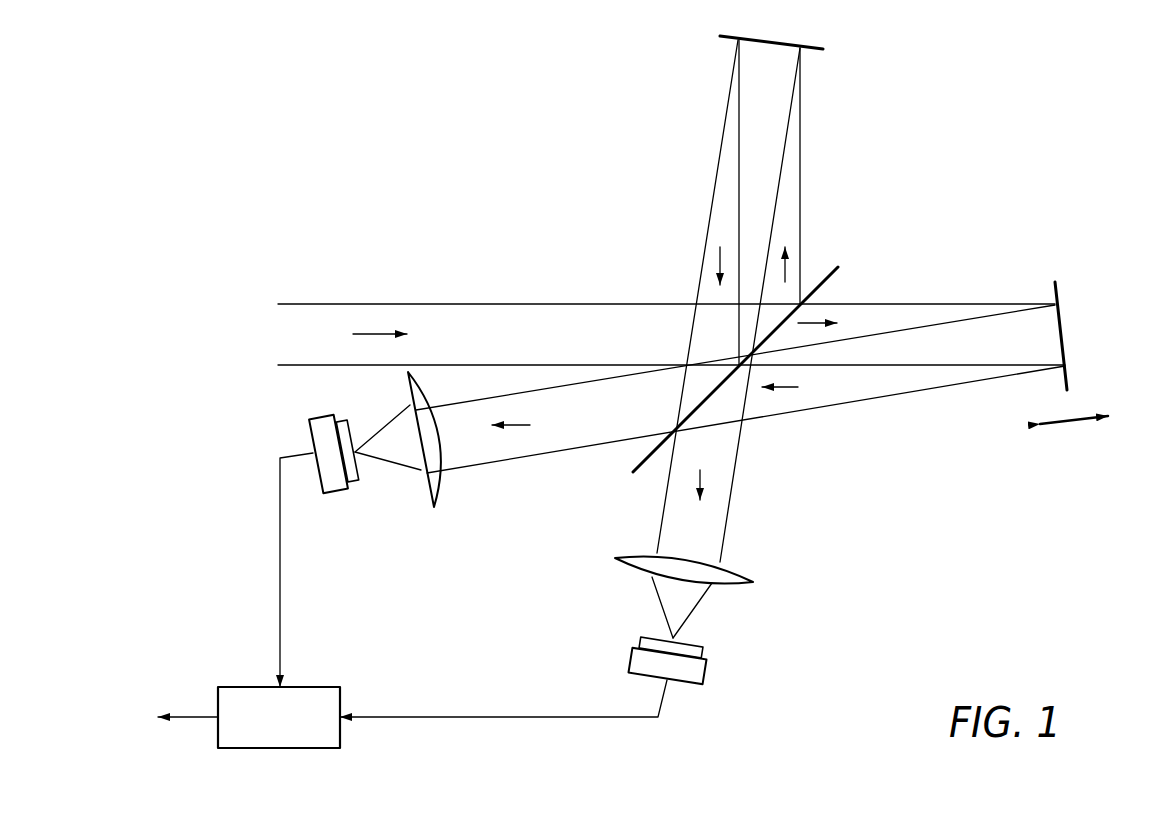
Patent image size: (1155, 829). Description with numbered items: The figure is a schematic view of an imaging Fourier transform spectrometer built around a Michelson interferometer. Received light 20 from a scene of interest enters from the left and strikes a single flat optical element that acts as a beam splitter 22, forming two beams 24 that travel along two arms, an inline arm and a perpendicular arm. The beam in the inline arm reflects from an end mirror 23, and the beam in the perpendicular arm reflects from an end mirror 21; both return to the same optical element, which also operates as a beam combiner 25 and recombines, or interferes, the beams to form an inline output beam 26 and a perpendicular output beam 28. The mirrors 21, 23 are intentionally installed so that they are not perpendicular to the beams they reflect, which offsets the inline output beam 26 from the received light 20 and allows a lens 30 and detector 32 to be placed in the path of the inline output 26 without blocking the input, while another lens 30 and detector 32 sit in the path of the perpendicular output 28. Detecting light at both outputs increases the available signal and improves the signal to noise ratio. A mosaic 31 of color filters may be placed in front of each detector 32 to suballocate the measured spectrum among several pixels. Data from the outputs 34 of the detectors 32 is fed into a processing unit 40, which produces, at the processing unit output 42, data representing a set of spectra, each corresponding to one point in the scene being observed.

The received light 20 is at (340, 328).
The end mirror 21 is at (720, 40).
The beam splitter 22 is at (785, 328).
The end mirror 23 is at (1060, 290).
The two beams 24 is at (792, 177).
The beam combiner 25 is at (830, 263).
The inline output beam 26 is at (573, 433).
The perpendicular output beam 28 is at (722, 510).
The lens 30 is at (435, 510).
The mosaic of color filters 31 is at (352, 485).
The detector 32 is at (337, 495).
The detector output 34 is at (293, 452).
The processing unit 40 is at (313, 687).
The processing unit output 42 is at (200, 717).